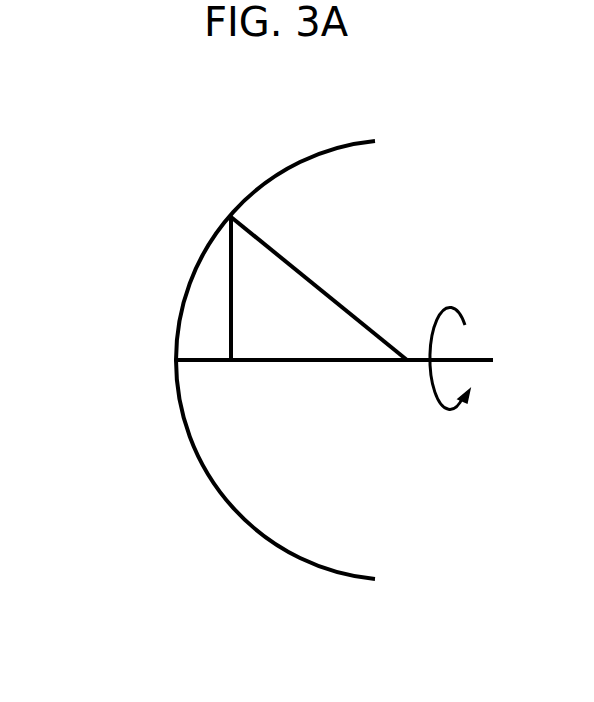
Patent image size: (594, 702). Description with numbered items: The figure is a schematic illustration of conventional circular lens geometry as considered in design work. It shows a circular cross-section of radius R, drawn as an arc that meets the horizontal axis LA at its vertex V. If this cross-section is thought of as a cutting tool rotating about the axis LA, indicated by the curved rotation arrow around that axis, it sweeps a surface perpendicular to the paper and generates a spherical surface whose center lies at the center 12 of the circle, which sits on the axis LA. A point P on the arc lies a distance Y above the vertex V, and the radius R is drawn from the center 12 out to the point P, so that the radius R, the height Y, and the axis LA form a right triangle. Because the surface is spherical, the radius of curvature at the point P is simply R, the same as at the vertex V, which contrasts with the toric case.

The center 12 is at (410, 355).
The axis LA is at (372, 358).
The distance above the vertex Y is at (245, 288).
The radius R is at (319, 288).
The point P is at (213, 202).
The vertex V is at (154, 362).